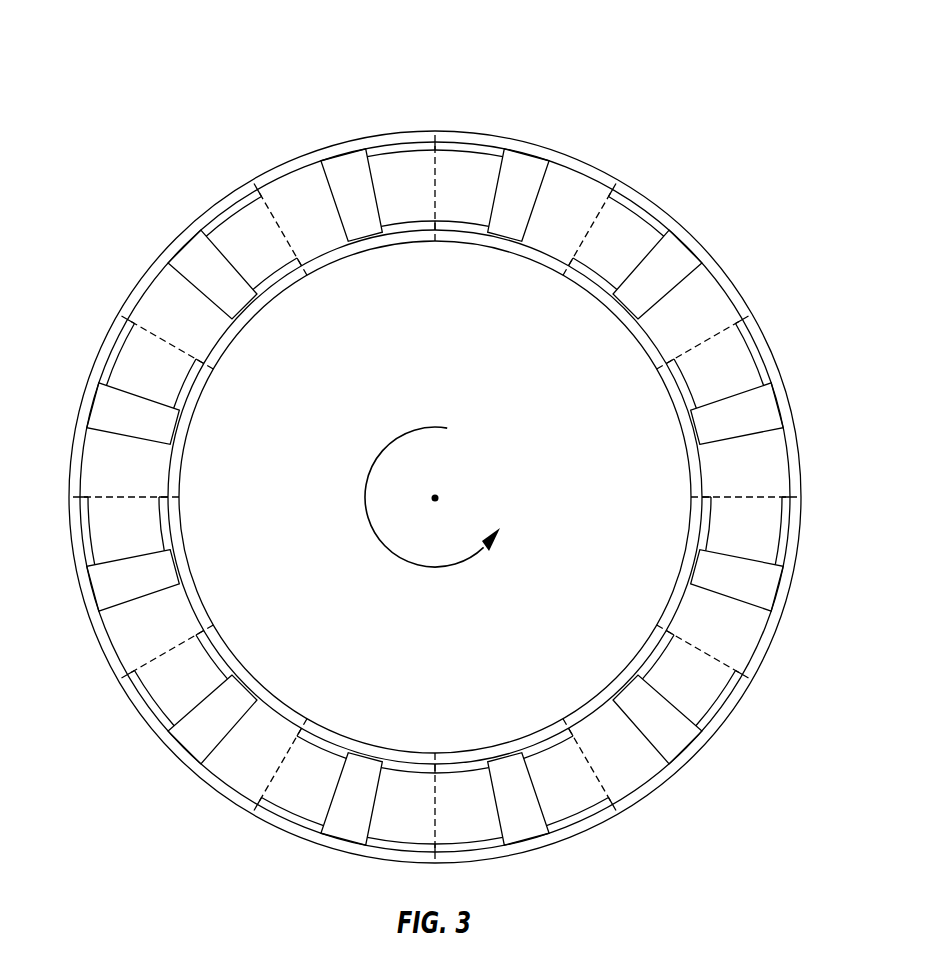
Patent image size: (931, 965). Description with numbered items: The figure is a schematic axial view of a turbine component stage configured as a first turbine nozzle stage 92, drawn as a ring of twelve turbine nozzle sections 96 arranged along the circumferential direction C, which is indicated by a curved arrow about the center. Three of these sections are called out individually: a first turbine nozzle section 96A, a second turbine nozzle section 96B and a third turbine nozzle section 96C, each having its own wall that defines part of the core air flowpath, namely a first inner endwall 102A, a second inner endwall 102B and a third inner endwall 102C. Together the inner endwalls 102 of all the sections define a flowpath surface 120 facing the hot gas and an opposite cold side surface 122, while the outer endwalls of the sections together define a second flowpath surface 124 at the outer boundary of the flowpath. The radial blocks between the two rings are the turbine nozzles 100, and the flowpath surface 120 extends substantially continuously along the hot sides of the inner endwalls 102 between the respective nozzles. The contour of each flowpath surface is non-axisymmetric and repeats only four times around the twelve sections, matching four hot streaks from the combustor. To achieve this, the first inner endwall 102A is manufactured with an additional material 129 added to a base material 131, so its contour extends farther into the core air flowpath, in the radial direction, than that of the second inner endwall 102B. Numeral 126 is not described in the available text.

The first turbine nozzle stage 92 is at (295, 110).
The turbine nozzle sections 96 is at (467, 508).
The first turbine nozzle section 96A is at (604, 150).
The second turbine nozzle section 96B is at (737, 243).
The third turbine nozzle section 96C is at (803, 360).
The turbine nozzles 100 is at (434, 472).
The inner endwalls 102 is at (435, 497).
The first inner endwall 102A is at (470, 244).
The second inner endwall 102B is at (617, 320).
The third inner endwall 102C is at (690, 458).
The flowpath surface 120 is at (266, 270).
The cold side surface 122 is at (321, 286).
The flowpath surface 124 is at (234, 220).
The outer ring outer surface 126 is at (196, 202).
The additional material 129 is at (105, 378).
The base material 131 is at (110, 340).
The circumferential direction C is at (488, 547).